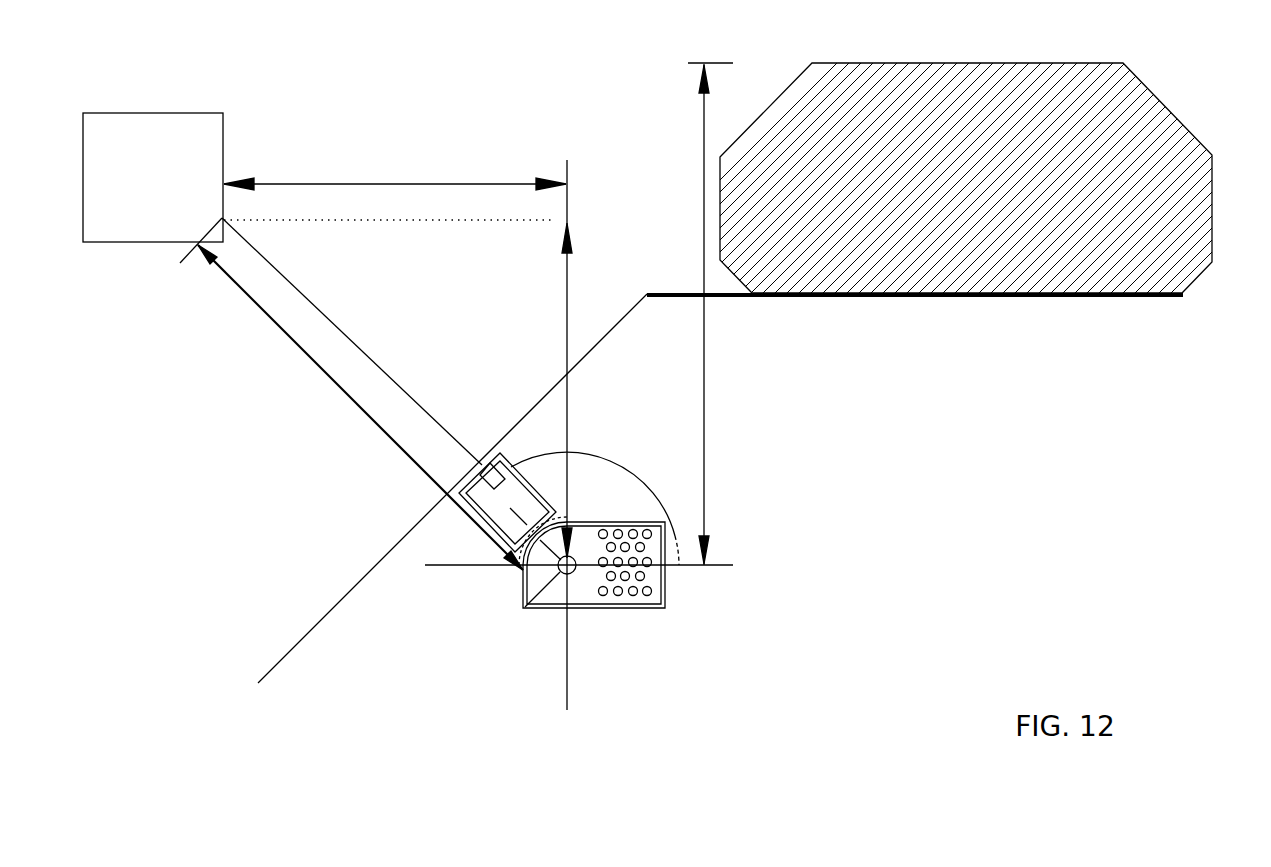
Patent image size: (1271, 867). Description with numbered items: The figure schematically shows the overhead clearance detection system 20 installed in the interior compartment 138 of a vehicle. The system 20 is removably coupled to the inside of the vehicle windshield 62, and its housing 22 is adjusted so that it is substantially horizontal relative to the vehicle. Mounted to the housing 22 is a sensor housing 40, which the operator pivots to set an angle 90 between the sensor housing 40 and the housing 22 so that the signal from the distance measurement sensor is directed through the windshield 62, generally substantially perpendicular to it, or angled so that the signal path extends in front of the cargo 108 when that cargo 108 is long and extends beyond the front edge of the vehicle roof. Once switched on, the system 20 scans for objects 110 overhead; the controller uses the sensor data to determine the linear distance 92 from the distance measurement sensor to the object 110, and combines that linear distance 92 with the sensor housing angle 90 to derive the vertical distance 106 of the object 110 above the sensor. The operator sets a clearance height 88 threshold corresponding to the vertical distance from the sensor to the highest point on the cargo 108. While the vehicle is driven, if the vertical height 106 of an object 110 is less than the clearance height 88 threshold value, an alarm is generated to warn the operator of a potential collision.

The overhead clearance detection system 20 is at (604, 612).
The housing 22 is at (545, 615).
The sensor housing 40 is at (512, 460).
The vehicle windshield 62 is at (330, 608).
The clearance height 88 is at (706, 437).
The angle 90 is at (585, 452).
The linear distance 92 is at (308, 362).
The vertical distance 106 is at (567, 320).
The cargo 108 is at (1155, 97).
The object 110 is at (221, 142).
The interior compartment 138 is at (915, 404).